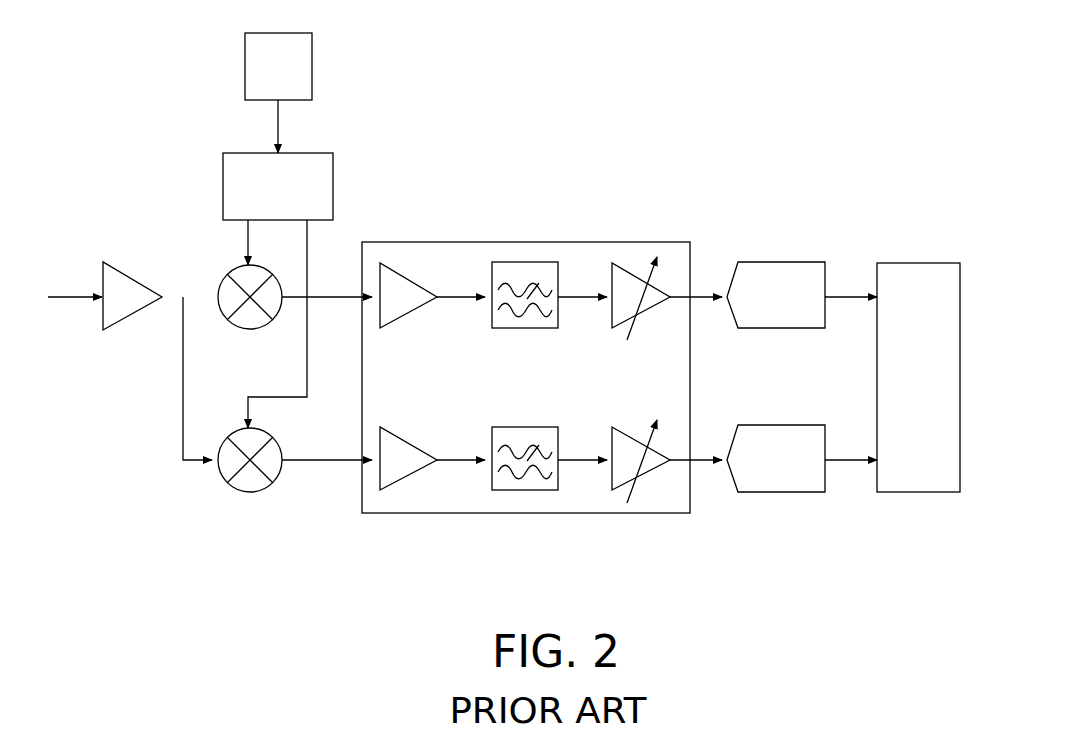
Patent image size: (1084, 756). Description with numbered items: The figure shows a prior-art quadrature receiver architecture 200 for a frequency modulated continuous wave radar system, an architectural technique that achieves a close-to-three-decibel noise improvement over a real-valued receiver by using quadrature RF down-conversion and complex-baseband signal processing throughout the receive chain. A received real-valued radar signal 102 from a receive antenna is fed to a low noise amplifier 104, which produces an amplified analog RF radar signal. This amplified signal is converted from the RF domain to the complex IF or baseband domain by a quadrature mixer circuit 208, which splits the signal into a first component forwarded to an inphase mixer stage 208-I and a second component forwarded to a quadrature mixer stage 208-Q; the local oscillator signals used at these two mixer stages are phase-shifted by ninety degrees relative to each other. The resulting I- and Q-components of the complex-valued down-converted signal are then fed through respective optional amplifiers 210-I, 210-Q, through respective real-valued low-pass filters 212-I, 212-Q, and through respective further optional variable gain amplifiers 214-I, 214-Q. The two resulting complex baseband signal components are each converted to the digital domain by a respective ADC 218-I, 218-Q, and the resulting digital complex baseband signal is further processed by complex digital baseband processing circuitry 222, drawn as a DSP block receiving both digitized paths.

The quadrature receiver architecture 200 is at (800, 43).
The received radar signal 102 is at (60, 295).
The low noise amplifier 104 is at (130, 275).
The quadrature mixer circuit 208 is at (332, 135).
The inphase mixer stage 208-I is at (230, 267).
The quadrature mixer stage 208-Q is at (250, 492).
The optional amplifier 210-I is at (393, 270).
The optional amplifier 210-Q is at (400, 482).
The real-valued low-pass filter 212-I is at (525, 262).
The real-valued low-pass filter 212-Q is at (522, 490).
The variable gain amplifier 214-I is at (622, 270).
The variable gain amplifier 214-Q is at (647, 475).
The ADC 218-I is at (793, 262).
The ADC 218-Q is at (782, 492).
The complex digital baseband processing circuitry 222 is at (918, 492).